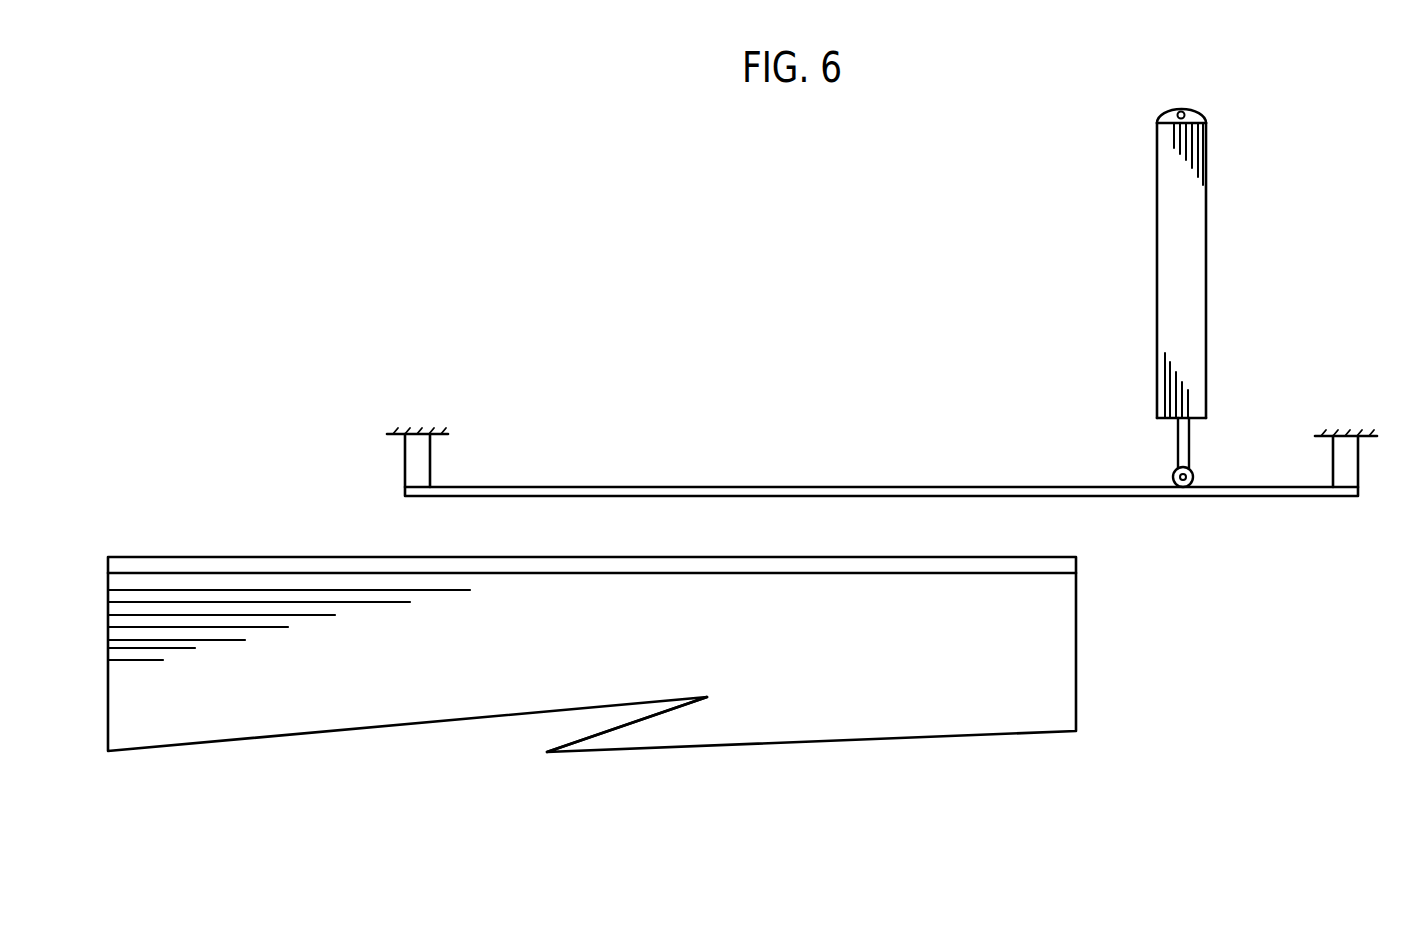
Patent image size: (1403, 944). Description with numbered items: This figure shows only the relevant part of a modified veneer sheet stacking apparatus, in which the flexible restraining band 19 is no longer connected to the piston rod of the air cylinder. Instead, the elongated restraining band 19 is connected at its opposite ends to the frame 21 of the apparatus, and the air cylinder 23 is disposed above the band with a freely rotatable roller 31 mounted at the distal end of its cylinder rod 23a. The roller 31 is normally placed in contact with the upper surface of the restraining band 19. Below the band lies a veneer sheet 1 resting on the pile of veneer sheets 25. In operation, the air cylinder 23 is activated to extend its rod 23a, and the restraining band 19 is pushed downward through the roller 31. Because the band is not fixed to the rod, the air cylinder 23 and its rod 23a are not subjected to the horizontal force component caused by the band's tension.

The veneer sheet 1 is at (547, 563).
The flexible restraining band 19 is at (645, 486).
The frame 21 is at (430, 455).
The air cylinder 23 is at (1177, 255).
The cylinder rod 23a is at (1183, 440).
The pile of veneer sheets 25 is at (727, 660).
The roller 31 is at (1172, 479).